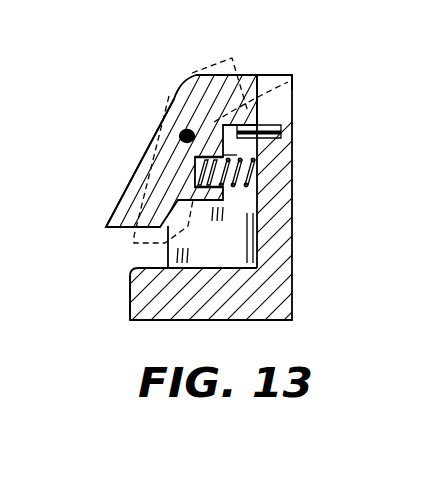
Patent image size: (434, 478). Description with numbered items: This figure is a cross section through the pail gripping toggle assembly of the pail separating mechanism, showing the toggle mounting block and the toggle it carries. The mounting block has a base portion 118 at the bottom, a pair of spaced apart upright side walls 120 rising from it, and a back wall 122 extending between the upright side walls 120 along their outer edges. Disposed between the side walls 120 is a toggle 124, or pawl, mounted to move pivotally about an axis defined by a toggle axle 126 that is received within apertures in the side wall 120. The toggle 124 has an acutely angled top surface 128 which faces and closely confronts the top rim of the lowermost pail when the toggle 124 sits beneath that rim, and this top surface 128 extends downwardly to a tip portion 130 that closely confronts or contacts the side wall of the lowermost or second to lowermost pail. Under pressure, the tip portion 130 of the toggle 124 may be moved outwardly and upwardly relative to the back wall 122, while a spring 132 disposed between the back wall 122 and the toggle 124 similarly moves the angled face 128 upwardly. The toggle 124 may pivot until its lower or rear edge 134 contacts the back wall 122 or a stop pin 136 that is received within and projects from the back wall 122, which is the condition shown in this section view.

The base portion 118 is at (228, 305).
The upright side wall 120 is at (238, 258).
The back wall 122 is at (282, 249).
The toggle 124 is at (136, 203).
The toggle axle 126 is at (178, 138).
The angled top surface 128 is at (138, 175).
The tip portion 130 is at (103, 228).
The spring 132 is at (247, 187).
The rear edge 134 is at (298, 62).
The stop pin 136 is at (284, 133).